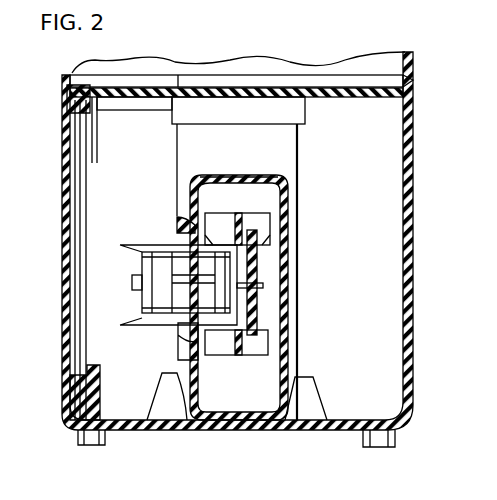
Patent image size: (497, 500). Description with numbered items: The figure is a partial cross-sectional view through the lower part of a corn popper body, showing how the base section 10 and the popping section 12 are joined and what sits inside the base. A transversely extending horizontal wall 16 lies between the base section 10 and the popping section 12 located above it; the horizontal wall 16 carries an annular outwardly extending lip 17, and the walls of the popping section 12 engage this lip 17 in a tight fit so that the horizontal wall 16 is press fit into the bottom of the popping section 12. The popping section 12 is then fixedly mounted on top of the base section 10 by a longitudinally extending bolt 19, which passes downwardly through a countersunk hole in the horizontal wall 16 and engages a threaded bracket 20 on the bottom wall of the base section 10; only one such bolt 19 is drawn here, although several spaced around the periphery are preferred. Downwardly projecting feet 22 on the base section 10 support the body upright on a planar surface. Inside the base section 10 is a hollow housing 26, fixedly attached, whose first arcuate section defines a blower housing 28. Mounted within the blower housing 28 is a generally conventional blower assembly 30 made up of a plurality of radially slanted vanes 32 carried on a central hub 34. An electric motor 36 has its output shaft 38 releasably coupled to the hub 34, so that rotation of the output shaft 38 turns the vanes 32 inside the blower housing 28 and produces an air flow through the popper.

The base section 10 is at (413, 295).
The popping section 12 is at (412, 76).
The horizontal wall 16 is at (355, 97).
The lip 17 is at (413, 97).
The bolt 19 is at (90, 158).
The threaded bracket 20 is at (101, 402).
The feet 22 is at (105, 442).
The housing 26 is at (294, 203).
The blower housing 28 is at (245, 180).
The blower assembly 30 is at (252, 356).
The vanes 32 is at (258, 215).
The hub 34 is at (256, 260).
The electric motor 36 is at (134, 278).
The output shaft 38 is at (264, 287).